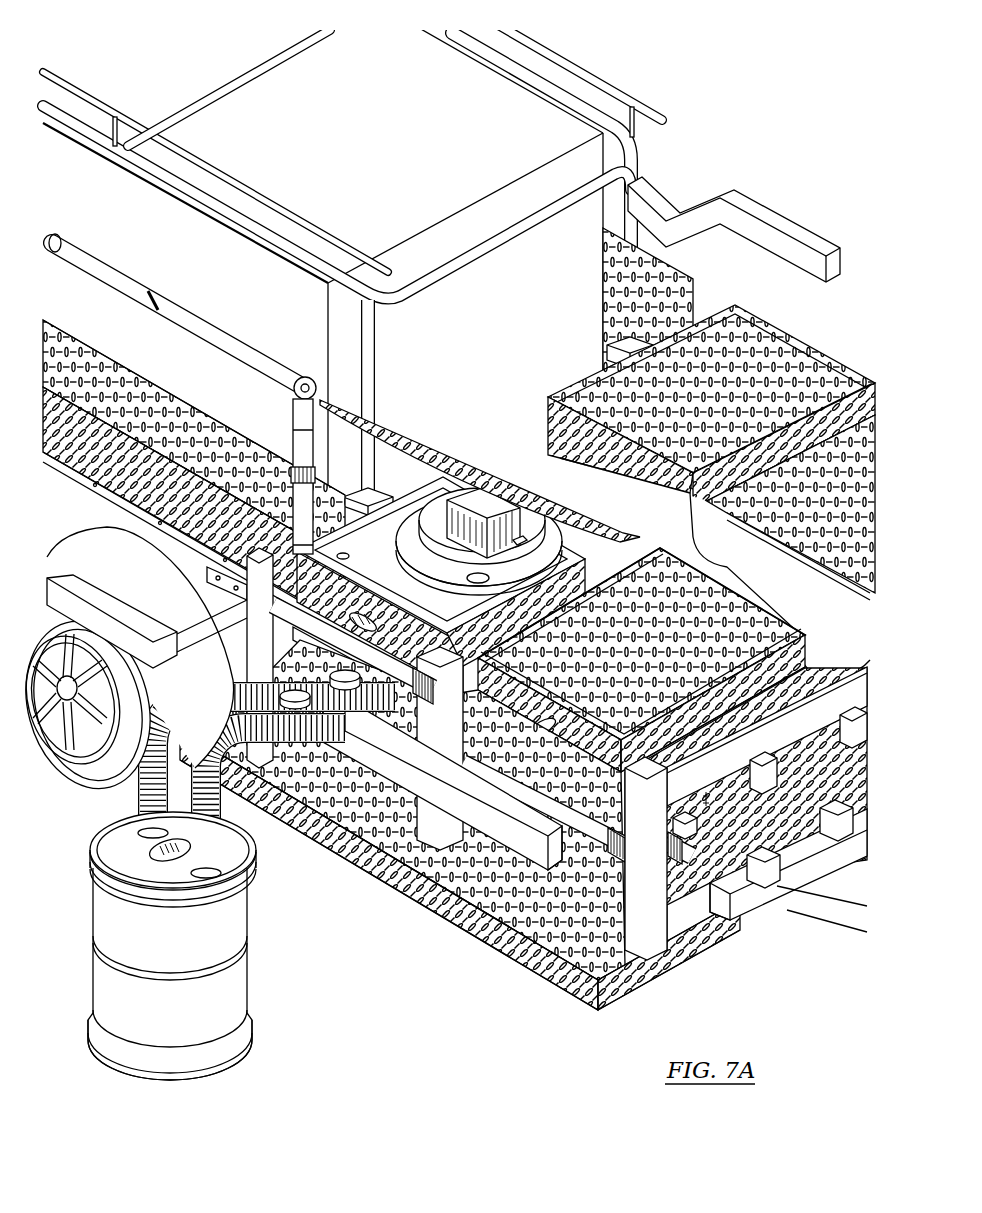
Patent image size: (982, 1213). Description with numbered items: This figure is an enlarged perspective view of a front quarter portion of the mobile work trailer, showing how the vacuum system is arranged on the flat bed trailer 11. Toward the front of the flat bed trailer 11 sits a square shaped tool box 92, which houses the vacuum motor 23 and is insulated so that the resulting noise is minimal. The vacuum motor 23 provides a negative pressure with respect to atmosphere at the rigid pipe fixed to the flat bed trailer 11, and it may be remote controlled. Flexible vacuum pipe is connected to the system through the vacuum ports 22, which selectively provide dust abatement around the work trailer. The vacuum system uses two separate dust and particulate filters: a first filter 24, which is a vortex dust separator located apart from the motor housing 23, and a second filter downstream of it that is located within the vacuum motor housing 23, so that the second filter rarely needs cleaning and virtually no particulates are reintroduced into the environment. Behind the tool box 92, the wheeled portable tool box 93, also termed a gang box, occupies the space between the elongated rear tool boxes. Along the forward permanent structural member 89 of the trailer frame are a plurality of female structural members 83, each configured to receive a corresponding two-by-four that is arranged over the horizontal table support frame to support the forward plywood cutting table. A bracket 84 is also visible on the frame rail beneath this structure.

The portable tool box 93 is at (404, 157).
The tool box 92 is at (641, 660).
The permanent structural member 89 is at (812, 740).
The vacuum motor 23 is at (500, 560).
The vacuum port 22 is at (345, 683).
The first filter 24 is at (232, 990).
The flat bed trailer 11 is at (522, 925).
The female structural member 83 is at (685, 850).
The bracket 84 is at (762, 880).